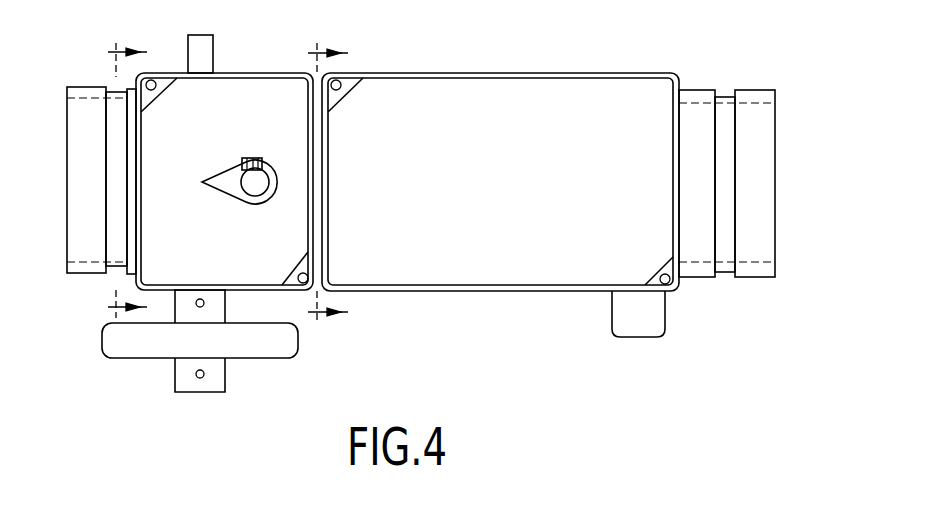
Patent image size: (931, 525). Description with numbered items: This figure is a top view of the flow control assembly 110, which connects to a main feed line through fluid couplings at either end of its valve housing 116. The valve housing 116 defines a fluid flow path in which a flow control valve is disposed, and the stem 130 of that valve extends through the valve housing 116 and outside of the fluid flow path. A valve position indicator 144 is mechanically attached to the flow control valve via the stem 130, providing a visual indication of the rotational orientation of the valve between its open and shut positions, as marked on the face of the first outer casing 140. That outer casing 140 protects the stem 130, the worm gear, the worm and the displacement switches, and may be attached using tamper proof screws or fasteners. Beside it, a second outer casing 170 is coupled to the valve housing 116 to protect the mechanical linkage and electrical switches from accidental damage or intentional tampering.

The flow control assembly 110 is at (745, 357).
The valve housing 116 is at (95, 273).
The stem 130 is at (253, 182).
The outer casing 140 is at (223, 93).
The valve position indicator 144 is at (230, 190).
The outer casing 170 is at (520, 268).